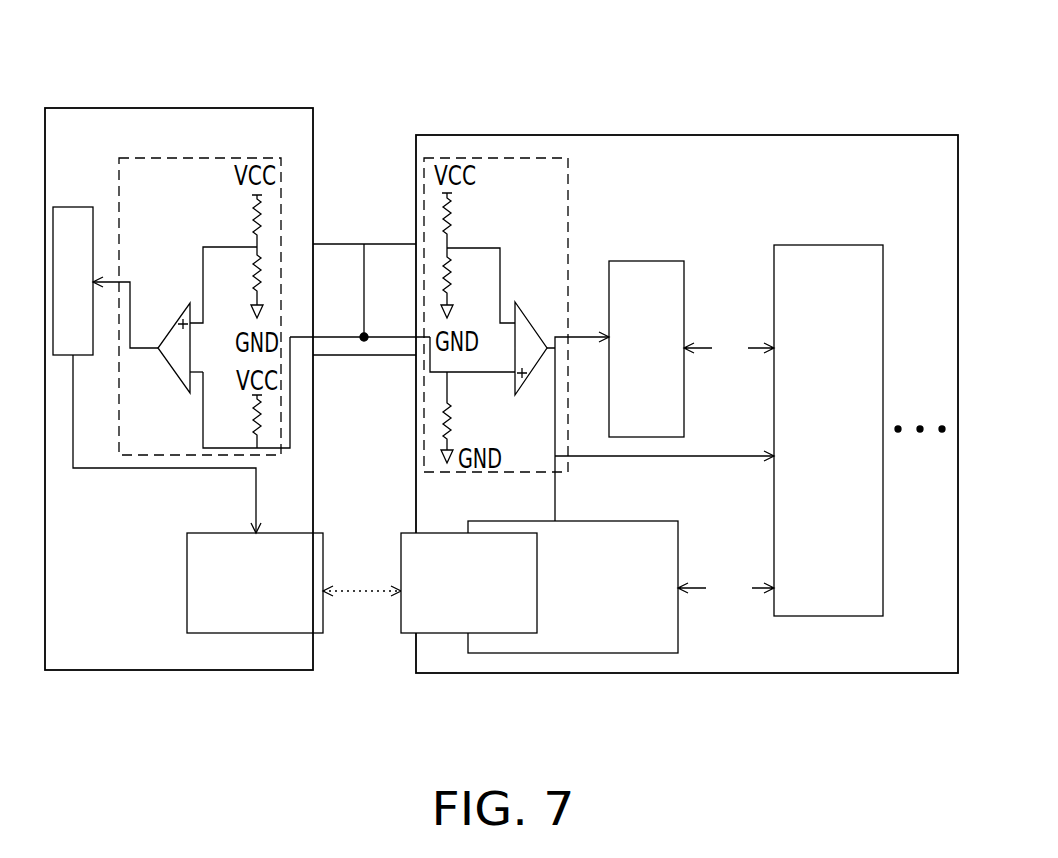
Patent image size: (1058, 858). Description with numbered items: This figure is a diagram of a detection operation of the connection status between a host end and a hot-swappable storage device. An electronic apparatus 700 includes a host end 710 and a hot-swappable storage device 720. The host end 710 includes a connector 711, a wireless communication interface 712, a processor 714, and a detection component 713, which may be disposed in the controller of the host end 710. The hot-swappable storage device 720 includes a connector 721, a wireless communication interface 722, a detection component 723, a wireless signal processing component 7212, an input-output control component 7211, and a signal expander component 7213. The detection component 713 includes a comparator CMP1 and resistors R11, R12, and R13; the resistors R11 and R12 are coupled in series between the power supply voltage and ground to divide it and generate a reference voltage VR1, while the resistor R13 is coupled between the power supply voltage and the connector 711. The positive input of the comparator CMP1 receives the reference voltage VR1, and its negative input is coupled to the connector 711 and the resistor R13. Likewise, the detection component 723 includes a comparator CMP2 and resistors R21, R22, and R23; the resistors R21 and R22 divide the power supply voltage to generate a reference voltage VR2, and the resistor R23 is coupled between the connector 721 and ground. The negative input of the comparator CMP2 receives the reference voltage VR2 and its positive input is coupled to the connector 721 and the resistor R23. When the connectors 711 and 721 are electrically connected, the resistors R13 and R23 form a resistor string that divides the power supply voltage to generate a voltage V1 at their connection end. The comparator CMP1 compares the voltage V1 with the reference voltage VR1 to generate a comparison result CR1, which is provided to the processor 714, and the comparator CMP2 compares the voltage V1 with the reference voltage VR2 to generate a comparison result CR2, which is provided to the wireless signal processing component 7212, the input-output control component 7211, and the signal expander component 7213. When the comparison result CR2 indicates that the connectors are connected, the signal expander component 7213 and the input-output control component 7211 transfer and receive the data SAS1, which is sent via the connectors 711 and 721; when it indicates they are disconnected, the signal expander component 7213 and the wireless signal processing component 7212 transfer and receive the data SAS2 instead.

The electronic apparatus 700 is at (501, 378).
The host end 710 is at (180, 108).
The connector 711 is at (335, 244).
The wireless communication interface 712 is at (255, 633).
The detection component 713 is at (172, 158).
The processor 714 is at (74, 207).
The hot-swappable storage device 720 is at (688, 135).
The connector 721 is at (390, 244).
The wireless communication interface 722 is at (441, 633).
The detection component 723 is at (568, 203).
The input-output control component 7211 is at (645, 261).
The wireless signal processing component 7212 is at (515, 653).
The signal expander component 7213 is at (822, 245).
The voltage V1 is at (365, 340).
The resistor R11 is at (237, 221).
The resistor R12 is at (237, 282).
The resistor R13 is at (237, 421).
The resistor R21 is at (467, 220).
The resistor R22 is at (467, 283).
The resistor R23 is at (470, 417).
The reference voltage VR1 is at (255, 246).
The reference voltage VR2 is at (497, 247).
The comparator CMP1 is at (180, 310).
The comparator CMP2 is at (545, 318).
The comparison result CR1 is at (144, 350).
The comparison result CR2 is at (557, 500).
The data SAS1 is at (729, 349).
The data SAS2 is at (726, 589).